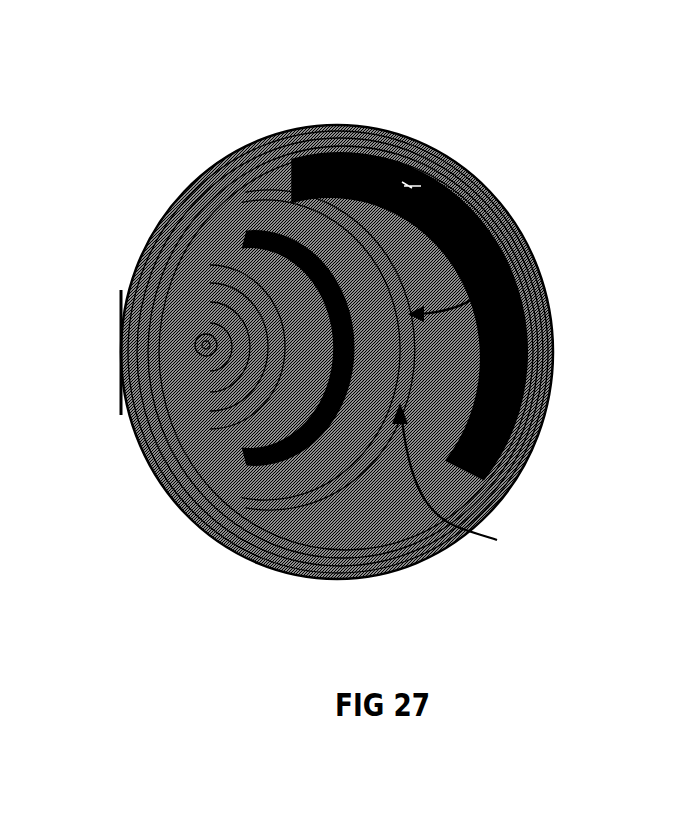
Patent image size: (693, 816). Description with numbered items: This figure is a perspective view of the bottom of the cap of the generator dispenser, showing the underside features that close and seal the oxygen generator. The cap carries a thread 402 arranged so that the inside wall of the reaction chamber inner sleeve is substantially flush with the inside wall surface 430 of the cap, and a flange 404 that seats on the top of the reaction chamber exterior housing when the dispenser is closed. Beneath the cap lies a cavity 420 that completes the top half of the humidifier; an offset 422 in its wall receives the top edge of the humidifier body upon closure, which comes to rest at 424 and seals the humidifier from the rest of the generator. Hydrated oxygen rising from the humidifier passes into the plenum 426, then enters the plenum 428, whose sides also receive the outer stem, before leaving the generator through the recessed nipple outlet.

The thread 402 is at (276, 411).
The flange 404 is at (145, 296).
The cavity 420 is at (437, 173).
The offset 422 is at (497, 540).
The resting position of humidifier body top edge 424 is at (495, 262).
The plenum 426 is at (256, 318).
The plenum 428 is at (210, 358).
The inside wall surface 430 is at (524, 403).